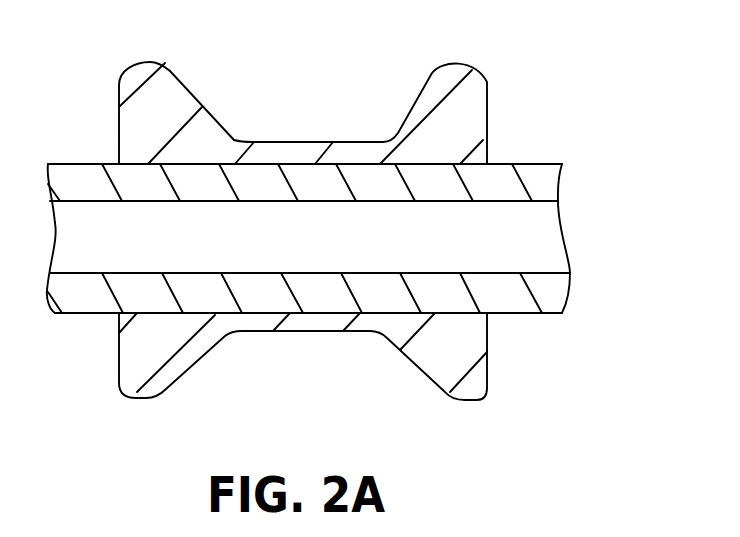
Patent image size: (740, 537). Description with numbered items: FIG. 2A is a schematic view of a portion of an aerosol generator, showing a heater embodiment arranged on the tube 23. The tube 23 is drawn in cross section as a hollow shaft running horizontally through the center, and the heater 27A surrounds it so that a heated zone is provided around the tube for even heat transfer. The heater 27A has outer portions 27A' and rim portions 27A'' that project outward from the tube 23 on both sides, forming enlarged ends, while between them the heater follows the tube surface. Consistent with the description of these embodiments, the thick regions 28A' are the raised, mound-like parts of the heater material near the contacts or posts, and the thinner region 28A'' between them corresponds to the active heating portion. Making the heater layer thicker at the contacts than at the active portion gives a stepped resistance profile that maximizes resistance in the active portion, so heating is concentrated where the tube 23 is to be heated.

The tube 23 is at (550, 180).
The roller 27A is at (352, 214).
The roller flange side 27A' is at (480, 117).
The roller flange rim 27A'' is at (359, 384).
The hub flange portion 28A' is at (312, 208).
The hub web portion 28A'' is at (297, 208).